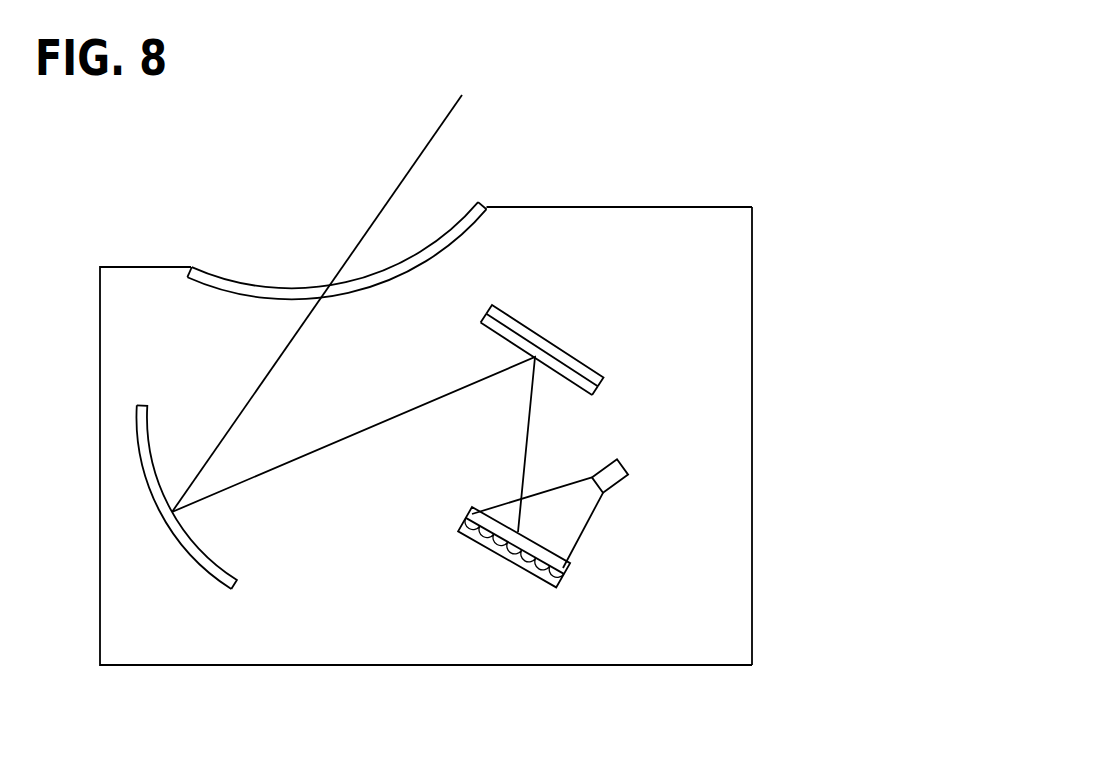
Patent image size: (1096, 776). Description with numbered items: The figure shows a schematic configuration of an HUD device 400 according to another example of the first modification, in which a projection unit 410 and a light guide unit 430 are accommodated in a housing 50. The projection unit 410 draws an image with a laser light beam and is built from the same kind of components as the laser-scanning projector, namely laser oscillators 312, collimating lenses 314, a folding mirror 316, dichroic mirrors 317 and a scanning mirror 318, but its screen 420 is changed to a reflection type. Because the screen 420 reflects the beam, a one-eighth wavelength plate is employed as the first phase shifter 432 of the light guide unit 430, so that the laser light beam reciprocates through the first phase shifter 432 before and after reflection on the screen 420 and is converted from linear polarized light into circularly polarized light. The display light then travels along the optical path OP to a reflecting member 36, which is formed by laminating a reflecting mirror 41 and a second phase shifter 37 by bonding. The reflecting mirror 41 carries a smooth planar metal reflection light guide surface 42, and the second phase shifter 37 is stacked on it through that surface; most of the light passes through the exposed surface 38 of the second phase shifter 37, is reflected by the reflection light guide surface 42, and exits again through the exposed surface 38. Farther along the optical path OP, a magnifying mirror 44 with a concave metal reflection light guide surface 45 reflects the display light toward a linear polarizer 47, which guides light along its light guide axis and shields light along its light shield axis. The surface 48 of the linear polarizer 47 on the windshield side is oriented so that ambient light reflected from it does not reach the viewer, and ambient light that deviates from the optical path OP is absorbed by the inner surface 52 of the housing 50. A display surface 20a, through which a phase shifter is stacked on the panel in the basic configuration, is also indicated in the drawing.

The HUD device 400 is at (712, 140).
The light guide unit 430 is at (209, 183).
The display surface 20a is at (213, 262).
The surface 48 is at (275, 281).
The linear polarizer 47 is at (463, 217).
The optical path OP is at (266, 375).
The housing 50 is at (753, 340).
The inner surface 52 is at (739, 548).
The reflecting member 36 is at (668, 386).
The reflecting mirror 41 is at (604, 377).
The reflection light guide surface 42 is at (516, 339).
The second phase shifter 37 is at (592, 395).
The exposed surface 38 is at (570, 384).
The magnifying mirror 44 is at (233, 586).
The reflection light guide surface 45 is at (222, 551).
The screen 420 is at (463, 537).
The first phase shifter 432 is at (468, 511).
The projection unit 410 is at (604, 494).
The laser oscillators 312 is at (752, 454).
The collimating lenses 314 is at (752, 454).
The folding mirror 316 is at (752, 454).
The dichroic mirrors 317 is at (752, 454).
The scanning mirror 318 is at (617, 460).